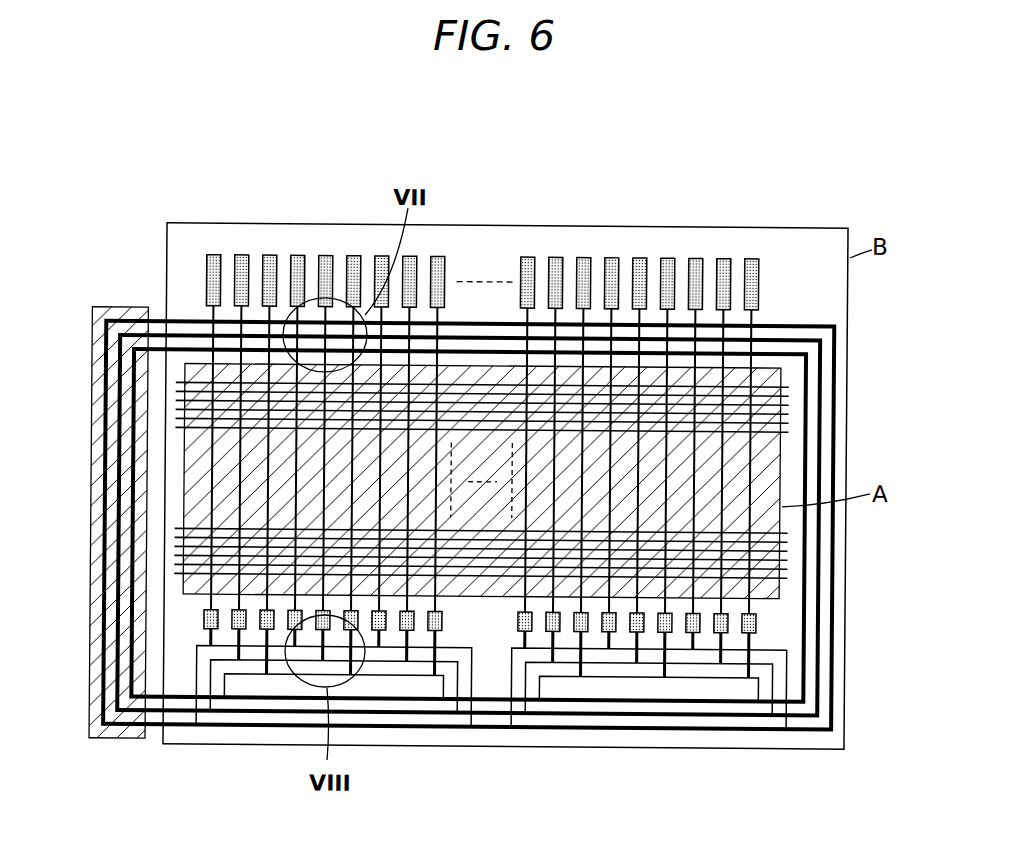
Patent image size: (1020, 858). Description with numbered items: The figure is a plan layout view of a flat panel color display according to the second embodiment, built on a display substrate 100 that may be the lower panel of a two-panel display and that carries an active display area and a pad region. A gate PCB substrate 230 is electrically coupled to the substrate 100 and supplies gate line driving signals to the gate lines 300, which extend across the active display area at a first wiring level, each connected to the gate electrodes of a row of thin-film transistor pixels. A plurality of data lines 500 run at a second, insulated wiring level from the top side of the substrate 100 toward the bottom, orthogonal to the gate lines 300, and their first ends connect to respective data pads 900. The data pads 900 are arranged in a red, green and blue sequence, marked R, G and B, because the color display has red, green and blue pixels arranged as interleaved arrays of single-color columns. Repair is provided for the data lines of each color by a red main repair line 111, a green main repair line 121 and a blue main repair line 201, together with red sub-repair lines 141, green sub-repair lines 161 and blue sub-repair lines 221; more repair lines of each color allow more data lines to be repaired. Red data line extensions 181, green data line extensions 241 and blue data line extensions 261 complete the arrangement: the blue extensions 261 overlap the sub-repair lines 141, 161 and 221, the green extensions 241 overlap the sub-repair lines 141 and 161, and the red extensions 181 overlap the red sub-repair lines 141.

The substrate 100 is at (850, 680).
The red main repair line 111 is at (834, 355).
The green main repair line 121 is at (819, 390).
The blue main repair line 201 is at (806, 420).
The gate PCB substrate 230 is at (116, 311).
The gate lines 300 is at (194, 382).
The data lines 500 is at (755, 473).
The data pads 900 is at (756, 286).
The red sub-repair lines 141 is at (199, 688).
The green sub-repair lines 161 is at (212, 690).
The blue sub-repair lines 221 is at (230, 690).
The red data line extensions 181 is at (524, 638).
The green data line extensions 241 is at (553, 638).
The blue data line extensions 261 is at (579, 637).